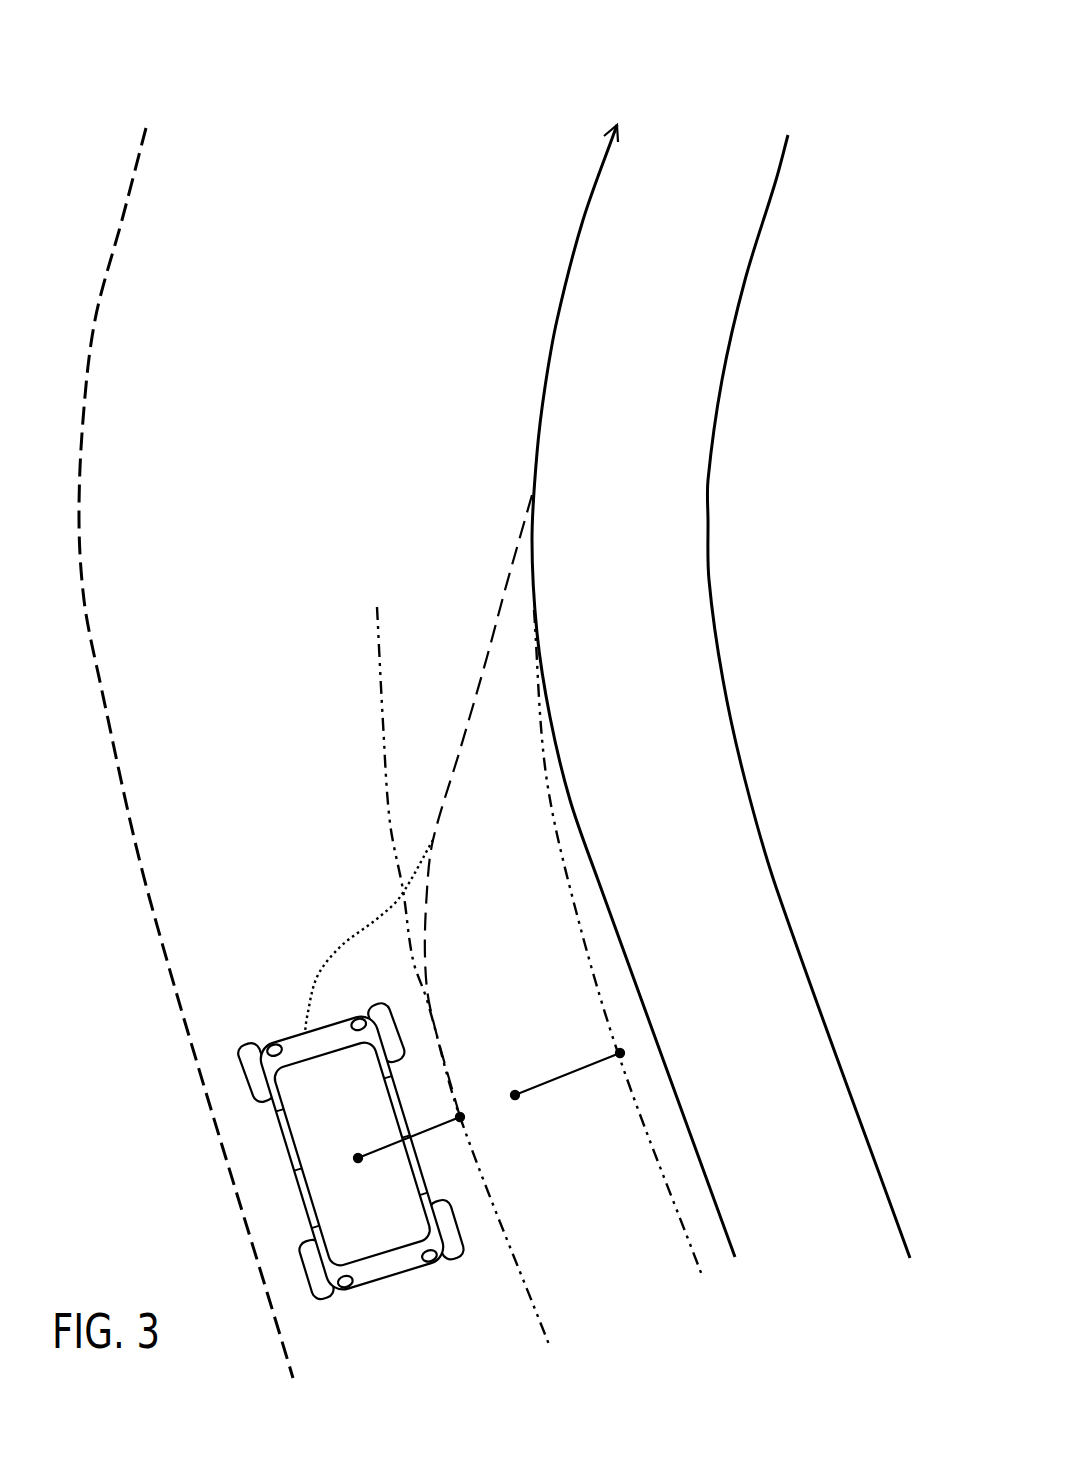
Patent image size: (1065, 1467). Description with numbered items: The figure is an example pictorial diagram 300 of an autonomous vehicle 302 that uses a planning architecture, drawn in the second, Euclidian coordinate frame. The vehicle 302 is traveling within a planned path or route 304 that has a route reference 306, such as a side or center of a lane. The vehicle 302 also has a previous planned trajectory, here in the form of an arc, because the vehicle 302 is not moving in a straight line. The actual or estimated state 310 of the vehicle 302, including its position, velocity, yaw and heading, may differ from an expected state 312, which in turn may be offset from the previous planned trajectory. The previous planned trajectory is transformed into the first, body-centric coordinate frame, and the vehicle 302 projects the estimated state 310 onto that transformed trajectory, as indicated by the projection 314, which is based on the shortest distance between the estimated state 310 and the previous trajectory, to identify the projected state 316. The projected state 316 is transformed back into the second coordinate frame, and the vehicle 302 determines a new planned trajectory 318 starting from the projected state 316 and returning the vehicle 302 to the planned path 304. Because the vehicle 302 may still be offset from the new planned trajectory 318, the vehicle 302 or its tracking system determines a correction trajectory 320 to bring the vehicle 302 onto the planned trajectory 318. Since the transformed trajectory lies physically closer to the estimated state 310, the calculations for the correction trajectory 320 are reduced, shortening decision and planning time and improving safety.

The pictorial diagram 300 is at (107, 29).
The autonomous vehicle 302 is at (351, 1168).
The planned path or route 304 is at (544, 390).
The route reference 306 is at (89, 630).
The estimated state 310 is at (358, 1153).
The expected state 312 is at (515, 1100).
The projection 314 is at (392, 1114).
The projected state 316 is at (467, 1123).
The new planned trajectory 318 is at (487, 652).
The correction trajectory 320 is at (378, 918).